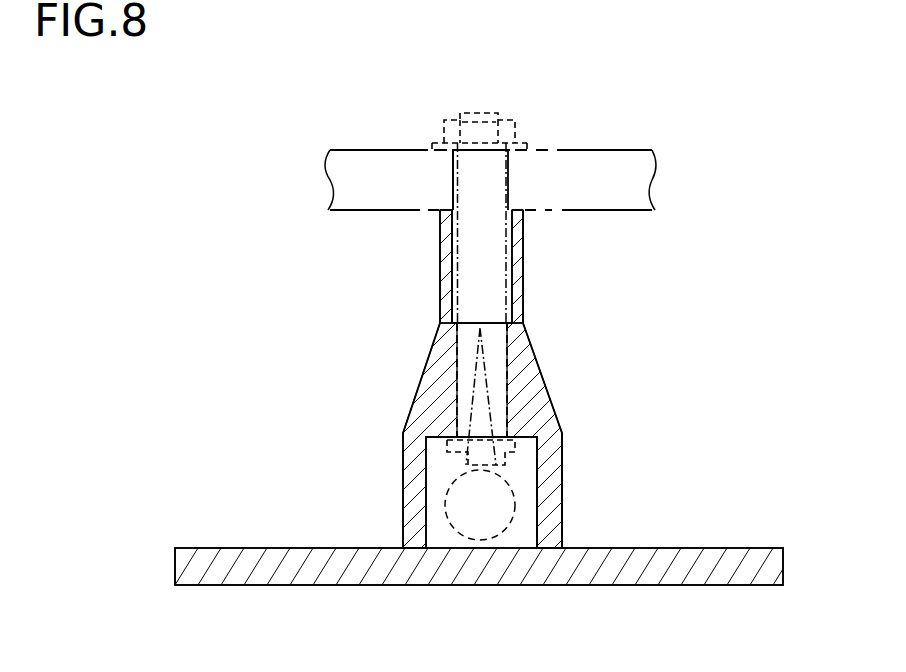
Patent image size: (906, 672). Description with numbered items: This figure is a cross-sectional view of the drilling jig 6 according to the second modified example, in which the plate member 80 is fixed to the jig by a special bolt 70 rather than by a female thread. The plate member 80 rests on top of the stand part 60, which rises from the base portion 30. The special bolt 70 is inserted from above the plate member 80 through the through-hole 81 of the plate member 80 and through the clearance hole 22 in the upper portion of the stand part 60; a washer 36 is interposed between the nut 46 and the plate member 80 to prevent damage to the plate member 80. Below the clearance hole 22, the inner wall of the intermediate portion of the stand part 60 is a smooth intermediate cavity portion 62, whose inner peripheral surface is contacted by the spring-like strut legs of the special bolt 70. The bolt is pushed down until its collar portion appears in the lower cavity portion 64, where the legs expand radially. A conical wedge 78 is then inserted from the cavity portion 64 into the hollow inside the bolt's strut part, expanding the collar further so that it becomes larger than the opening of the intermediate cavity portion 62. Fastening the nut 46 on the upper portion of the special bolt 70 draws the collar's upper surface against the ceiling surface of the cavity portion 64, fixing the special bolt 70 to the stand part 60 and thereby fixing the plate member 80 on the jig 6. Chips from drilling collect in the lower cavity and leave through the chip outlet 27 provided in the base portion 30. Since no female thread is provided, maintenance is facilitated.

The drilling jig 6 is at (656, 298).
The plate member 80 is at (623, 150).
The through-hole 81 is at (460, 190).
The nut 46 is at (483, 128).
The washer 36 is at (527, 143).
The special bolt 70 is at (470, 262).
The stand part 60 is at (525, 248).
The clearance hole 22 is at (465, 288).
The intermediate cavity portion 62 is at (462, 378).
The wedge 78 is at (484, 414).
The cavity portion 64 is at (543, 503).
The chip outlet 27 is at (447, 505).
The base portion 30 is at (632, 585).